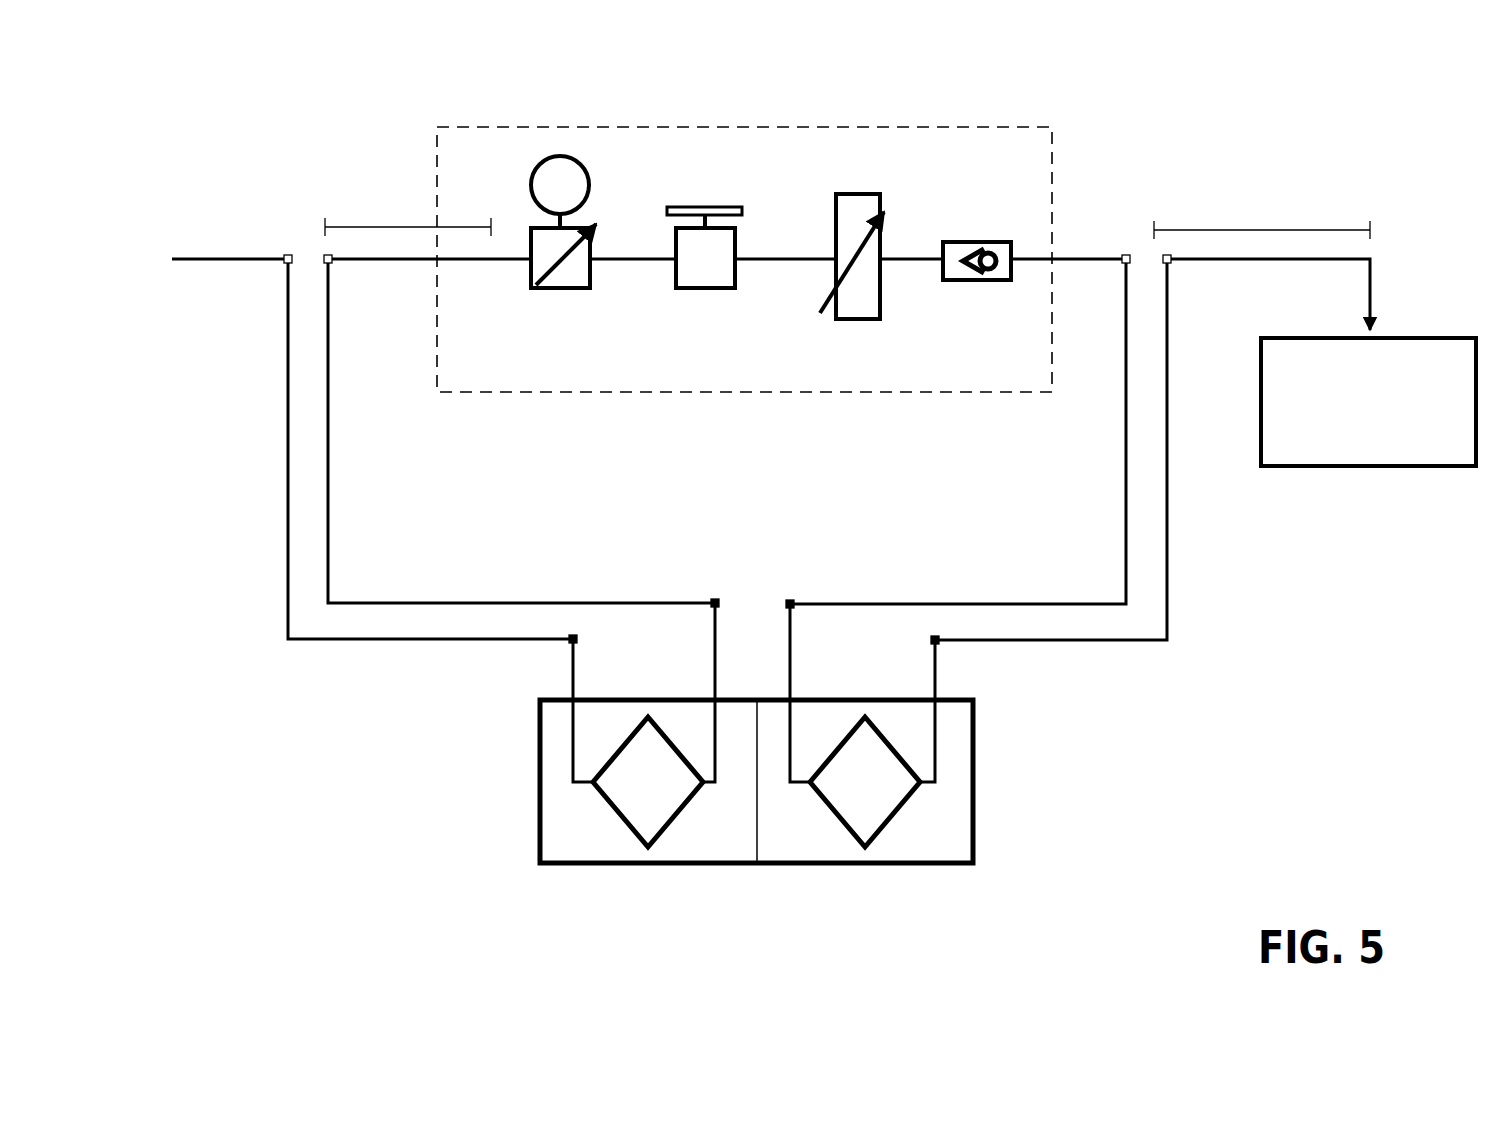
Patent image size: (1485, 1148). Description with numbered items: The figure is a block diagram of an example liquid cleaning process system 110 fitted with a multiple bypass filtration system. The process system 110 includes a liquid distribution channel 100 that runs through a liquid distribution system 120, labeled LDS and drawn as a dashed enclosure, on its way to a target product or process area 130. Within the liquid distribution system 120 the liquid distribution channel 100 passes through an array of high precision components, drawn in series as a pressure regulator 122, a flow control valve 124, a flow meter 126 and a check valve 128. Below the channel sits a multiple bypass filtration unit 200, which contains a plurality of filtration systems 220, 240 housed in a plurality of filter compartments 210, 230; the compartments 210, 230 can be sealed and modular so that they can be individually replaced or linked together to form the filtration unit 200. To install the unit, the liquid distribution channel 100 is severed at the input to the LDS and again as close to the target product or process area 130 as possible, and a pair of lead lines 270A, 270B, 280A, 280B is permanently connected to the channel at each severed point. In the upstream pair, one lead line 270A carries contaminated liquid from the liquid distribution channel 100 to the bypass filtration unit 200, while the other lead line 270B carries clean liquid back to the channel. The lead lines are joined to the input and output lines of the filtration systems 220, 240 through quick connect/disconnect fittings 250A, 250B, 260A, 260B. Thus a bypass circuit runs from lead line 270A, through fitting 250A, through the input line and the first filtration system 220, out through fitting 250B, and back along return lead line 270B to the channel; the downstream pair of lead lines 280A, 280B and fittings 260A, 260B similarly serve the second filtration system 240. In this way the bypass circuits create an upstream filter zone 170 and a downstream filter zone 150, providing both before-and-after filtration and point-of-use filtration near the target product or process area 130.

The liquid distribution channel 100 is at (198, 261).
The liquid cleaning process system 110 is at (738, 492).
The liquid distribution system 120 is at (803, 127).
The pressure regulator 122 is at (548, 291).
The flow control valve 124 is at (705, 291).
The flow meter 126 is at (853, 322).
The check valve 128 is at (970, 282).
The target product or process area 130 is at (1283, 469).
The filter zone 150 is at (1263, 197).
The filter zone 170 is at (316, 200).
The multiple bypass filtration unit 200 is at (757, 868).
The filter compartment 210 is at (605, 852).
The filtration system 220 is at (667, 825).
The filter compartment 230 is at (892, 852).
The filtration system 240 is at (835, 818).
The quick connect/disconnect fitting 250A is at (570, 645).
The quick connect/disconnect fitting 250B is at (716, 600).
The quick connect/disconnect fitting 260A is at (790, 600).
The quick connect/disconnect fitting 260B is at (940, 644).
The lead line 270A is at (287, 550).
The lead line 270B is at (327, 550).
The lead line 280A is at (1126, 545).
The lead line 280B is at (1170, 620).